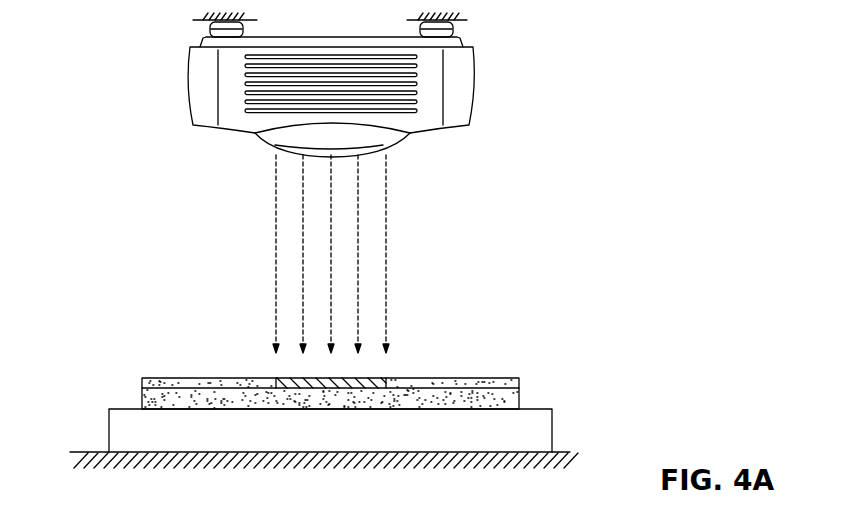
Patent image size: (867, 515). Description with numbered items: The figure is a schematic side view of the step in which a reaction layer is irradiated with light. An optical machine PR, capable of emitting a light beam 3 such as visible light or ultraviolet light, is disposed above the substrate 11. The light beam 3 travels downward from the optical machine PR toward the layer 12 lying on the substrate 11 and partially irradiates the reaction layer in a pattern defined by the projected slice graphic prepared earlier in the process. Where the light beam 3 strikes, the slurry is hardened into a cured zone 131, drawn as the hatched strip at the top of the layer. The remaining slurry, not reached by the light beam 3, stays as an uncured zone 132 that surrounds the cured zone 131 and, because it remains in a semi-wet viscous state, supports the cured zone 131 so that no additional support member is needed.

The optical machine PR is at (467, 92).
The light beam 3 is at (303, 220).
The substrate 11 is at (120, 435).
The substrate layer 12 is at (150, 400).
The cured zone 131 is at (375, 380).
The uncured zone 132 is at (487, 380).